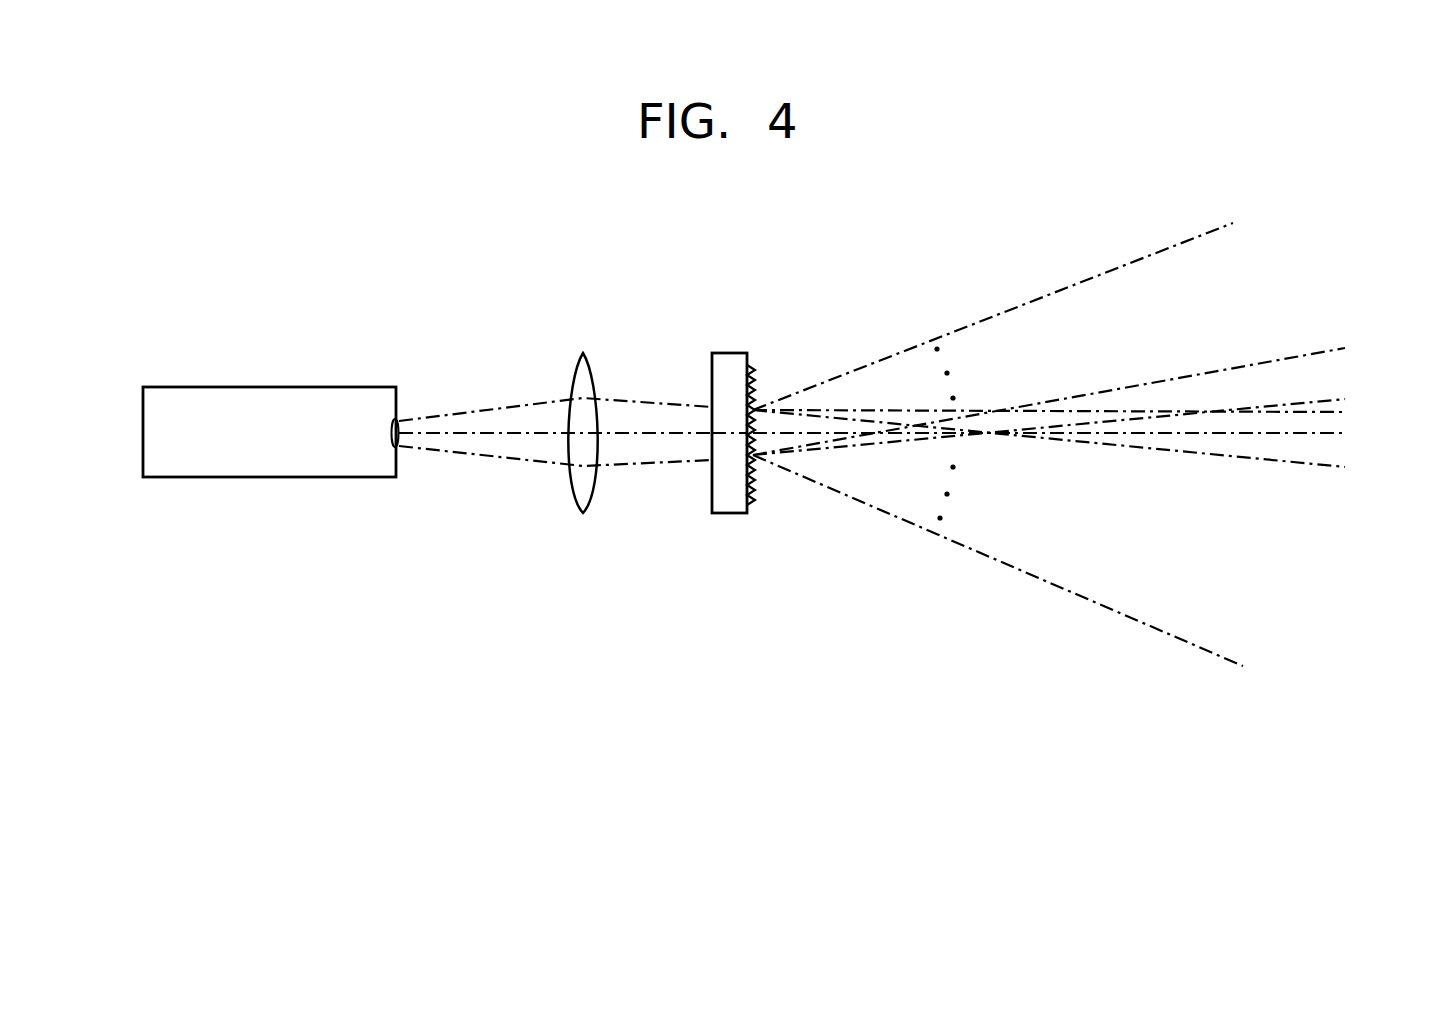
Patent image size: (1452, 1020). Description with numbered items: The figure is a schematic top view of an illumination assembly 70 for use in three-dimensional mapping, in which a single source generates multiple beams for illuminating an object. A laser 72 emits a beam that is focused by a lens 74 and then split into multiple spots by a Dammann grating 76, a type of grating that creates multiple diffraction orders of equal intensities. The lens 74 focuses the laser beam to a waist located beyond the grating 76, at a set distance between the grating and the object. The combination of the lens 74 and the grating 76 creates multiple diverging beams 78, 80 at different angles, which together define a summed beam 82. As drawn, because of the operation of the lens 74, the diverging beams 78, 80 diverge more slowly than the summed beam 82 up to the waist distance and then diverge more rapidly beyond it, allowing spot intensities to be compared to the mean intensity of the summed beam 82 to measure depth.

The illumination assembly 70 is at (767, 553).
The laser 72 is at (238, 387).
The lens 74 is at (590, 370).
The Dammann grating 76 is at (732, 353).
The diverging beam 78 is at (1355, 400).
The diverging beam 80 is at (1348, 348).
The summed beam 82 is at (1078, 283).